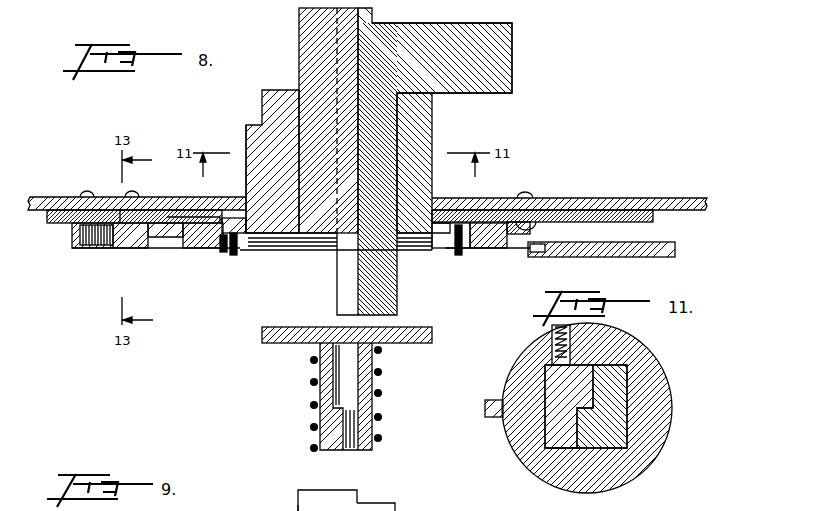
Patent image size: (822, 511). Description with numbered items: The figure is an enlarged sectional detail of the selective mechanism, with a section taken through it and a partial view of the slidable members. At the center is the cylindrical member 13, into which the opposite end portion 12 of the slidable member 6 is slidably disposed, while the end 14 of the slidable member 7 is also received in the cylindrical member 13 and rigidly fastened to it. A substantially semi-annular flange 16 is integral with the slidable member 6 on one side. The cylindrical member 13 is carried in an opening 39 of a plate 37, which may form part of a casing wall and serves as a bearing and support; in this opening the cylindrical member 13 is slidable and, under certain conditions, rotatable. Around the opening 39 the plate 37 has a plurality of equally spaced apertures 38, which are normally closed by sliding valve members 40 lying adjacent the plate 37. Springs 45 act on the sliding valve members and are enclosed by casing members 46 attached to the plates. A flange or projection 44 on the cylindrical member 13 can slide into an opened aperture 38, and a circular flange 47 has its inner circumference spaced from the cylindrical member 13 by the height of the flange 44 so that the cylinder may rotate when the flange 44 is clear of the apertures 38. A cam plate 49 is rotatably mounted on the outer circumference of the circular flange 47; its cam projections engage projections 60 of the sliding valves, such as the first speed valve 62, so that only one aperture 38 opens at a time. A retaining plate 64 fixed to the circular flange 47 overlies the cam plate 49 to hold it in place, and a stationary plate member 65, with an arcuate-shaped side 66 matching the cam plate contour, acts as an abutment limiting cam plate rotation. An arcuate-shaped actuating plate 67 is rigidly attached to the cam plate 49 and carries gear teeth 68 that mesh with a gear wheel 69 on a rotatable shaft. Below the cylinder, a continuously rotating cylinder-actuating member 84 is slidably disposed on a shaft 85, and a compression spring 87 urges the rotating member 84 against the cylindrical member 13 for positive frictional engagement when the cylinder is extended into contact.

In FIG. 8, the slidable member 6 is at (375, 260).
In FIG. 11, the slidable member 6 is at (617, 378).
In FIG. 9, the slidable member 6 is at (398, 508).
In FIG. 8, the slidable member 7 is at (325, 220).
In FIG. 11, the slidable member 7 is at (548, 435).
In FIG. 9, the slidable member 7 is at (298, 503).
In FIG. 8, the opposite end portion 12 is at (397, 306).
In FIG. 11, the opposite end portion 12 is at (622, 390).
In FIG. 9, the opposite end portion 12 is at (269, 498).
In FIG. 8, the cylindrical member 13 is at (277, 90).
In FIG. 11, the cylindrical member 13 is at (662, 398).
In FIG. 11, the end 14 is at (563, 440).
In FIG. 8, the flange 16 is at (512, 58).
In FIG. 8, the plate 37 is at (592, 198).
In FIG. 8, the openings or apertures 38 is at (235, 257).
In FIG. 8, the opening 39 is at (424, 224).
In FIG. 8, the sliding valve members 40 is at (142, 240).
In FIG. 8, the flange or projection 44 is at (246, 125).
In FIG. 11, the flange or projection 44 is at (492, 417).
In FIG. 8, the springs 45 is at (105, 249).
In FIG. 8, the casing members 46 is at (88, 247).
In FIG. 8, the circular flange 47 is at (207, 250).
In FIG. 8, the cam plate 49 is at (192, 250).
In FIG. 8, the projections 60 is at (158, 228).
In FIG. 8, the sliding valve 62 is at (122, 240).
In FIG. 8, the retaining plate 64 is at (468, 250).
In FIG. 8, the stationary plate member 65 is at (558, 216).
In FIG. 8, the arcuate-shaped side 66 is at (522, 196).
In FIG. 8, the arcuate-shaped actuating plate 67 is at (498, 250).
In FIG. 8, the gear teeth 68 is at (537, 253).
In FIG. 8, the gear wheel 69 is at (640, 258).
In FIG. 8, the continuously rotating plate or cylinder-actuating member 84 is at (432, 341).
In FIG. 8, the shaft 85 is at (366, 430).
In FIG. 8, the compression spring 87 is at (372, 400).